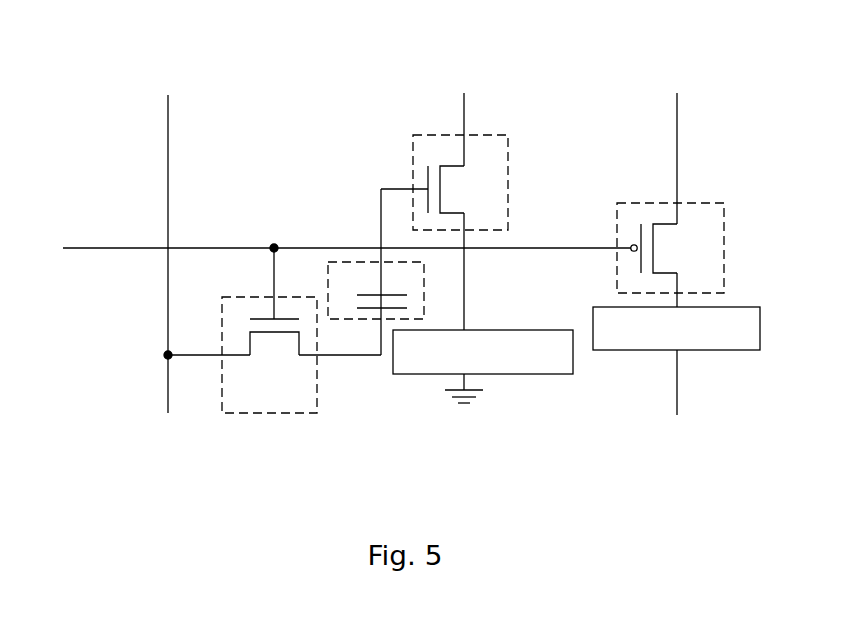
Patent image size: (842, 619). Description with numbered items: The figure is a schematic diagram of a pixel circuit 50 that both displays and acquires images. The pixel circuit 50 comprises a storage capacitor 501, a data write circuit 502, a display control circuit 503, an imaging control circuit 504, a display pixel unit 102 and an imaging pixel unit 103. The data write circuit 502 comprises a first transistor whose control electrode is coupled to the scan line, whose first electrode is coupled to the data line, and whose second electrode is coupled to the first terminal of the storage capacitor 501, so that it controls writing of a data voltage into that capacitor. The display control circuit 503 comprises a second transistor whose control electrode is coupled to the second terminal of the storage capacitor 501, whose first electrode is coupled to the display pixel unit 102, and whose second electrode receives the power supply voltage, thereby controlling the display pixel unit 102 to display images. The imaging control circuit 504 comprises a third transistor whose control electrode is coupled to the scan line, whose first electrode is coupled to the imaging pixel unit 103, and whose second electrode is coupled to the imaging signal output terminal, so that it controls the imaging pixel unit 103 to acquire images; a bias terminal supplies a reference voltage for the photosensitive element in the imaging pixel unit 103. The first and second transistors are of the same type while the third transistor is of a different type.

The pixel circuit 50 is at (28, 51).
The storage capacitor 501 is at (342, 262).
The data write circuit 502 is at (257, 414).
The display control circuit 503 is at (480, 134).
The imaging control circuit 504 is at (700, 203).
The display pixel unit 102 is at (498, 330).
The imaging pixel unit 103 is at (724, 307).